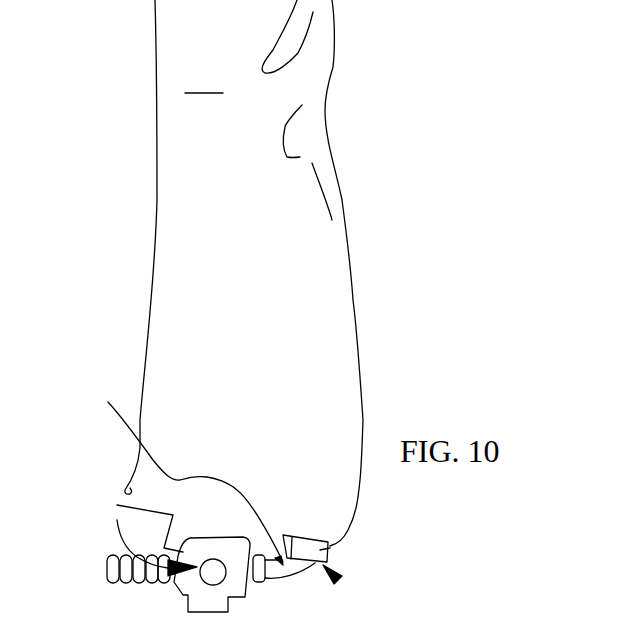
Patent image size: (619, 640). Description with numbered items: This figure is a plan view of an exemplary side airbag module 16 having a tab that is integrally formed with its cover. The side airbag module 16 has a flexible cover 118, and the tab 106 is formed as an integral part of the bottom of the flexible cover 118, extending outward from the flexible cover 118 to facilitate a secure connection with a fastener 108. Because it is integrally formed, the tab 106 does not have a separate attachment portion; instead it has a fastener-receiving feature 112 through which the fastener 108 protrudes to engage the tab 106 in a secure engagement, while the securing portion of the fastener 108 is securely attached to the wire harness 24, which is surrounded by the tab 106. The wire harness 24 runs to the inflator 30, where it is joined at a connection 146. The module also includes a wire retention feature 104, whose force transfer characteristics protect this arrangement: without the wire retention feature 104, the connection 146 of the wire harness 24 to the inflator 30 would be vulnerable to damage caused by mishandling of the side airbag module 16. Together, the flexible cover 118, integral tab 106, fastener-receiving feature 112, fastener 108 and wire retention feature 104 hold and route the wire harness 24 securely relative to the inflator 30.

The side airbag module 16 is at (315, 265).
The flexible cover 118 is at (185, 93).
The wire harness 24 is at (70, 567).
The fastener-receiving feature 112 is at (117, 520).
The fastener 108 is at (104, 639).
The tab 106 is at (228, 597).
The wire retention feature 104 is at (358, 638).
The inflator 30 is at (330, 548).
The connection 146 is at (338, 580).